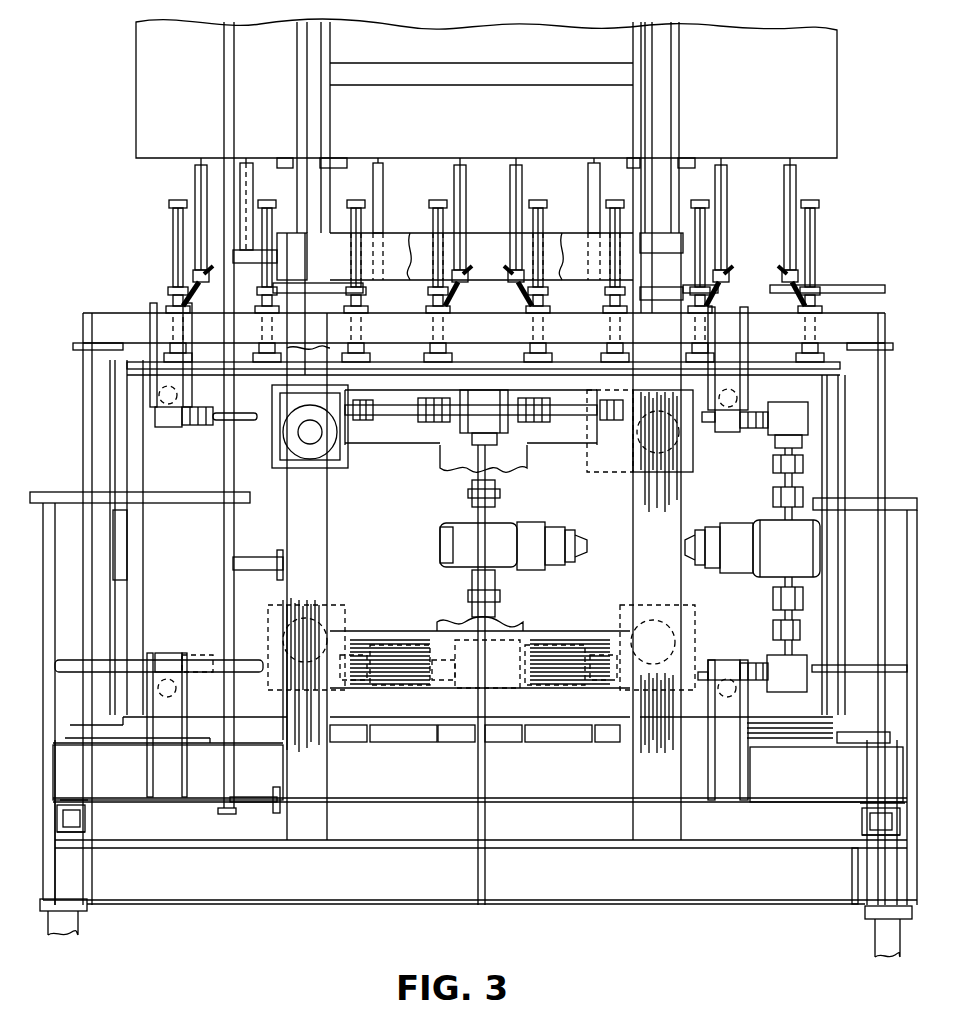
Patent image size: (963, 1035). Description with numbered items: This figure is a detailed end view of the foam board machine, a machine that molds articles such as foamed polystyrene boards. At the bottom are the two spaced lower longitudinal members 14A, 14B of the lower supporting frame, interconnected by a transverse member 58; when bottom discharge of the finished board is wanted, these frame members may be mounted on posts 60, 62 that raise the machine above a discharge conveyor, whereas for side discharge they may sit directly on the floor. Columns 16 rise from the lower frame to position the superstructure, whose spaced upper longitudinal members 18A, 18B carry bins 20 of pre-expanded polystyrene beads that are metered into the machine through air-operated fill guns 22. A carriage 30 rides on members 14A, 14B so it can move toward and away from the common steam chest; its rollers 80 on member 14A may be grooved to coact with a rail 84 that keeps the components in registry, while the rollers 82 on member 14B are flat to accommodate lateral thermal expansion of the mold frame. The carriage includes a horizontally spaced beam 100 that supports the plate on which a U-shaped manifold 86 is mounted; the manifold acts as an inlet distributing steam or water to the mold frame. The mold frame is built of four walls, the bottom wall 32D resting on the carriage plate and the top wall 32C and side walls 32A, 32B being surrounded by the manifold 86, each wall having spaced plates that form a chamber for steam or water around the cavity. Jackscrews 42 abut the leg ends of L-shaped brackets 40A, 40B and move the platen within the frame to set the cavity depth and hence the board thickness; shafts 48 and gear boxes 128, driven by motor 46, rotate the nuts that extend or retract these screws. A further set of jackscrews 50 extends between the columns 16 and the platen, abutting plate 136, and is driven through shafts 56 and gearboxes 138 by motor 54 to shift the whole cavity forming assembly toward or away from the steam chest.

The lower longitudinal member 14A is at (885, 888).
The lower longitudinal member 14B is at (72, 870).
The column 16 is at (328, 772).
The upper longitudinal member 18A is at (645, 292).
The upper longitudinal member 18B is at (327, 253).
The bin 20 is at (479, 134).
The air-operated fill gun 22 is at (172, 263).
The carriage 30 is at (418, 805).
The side wall of mold frame 32A is at (140, 548).
The side wall of mold frame 32B is at (830, 483).
The top wall of mold frame 32C is at (583, 367).
The bottom wall of mold frame 32D is at (575, 720).
The L-shaped bracket 40A is at (148, 772).
The L-shaped bracket 40B is at (157, 397).
The jackscrew 42 is at (173, 395).
The motor 46 is at (795, 560).
The shaft 48 is at (780, 482).
The jackscrew 50 is at (335, 455).
The motor 54 is at (496, 557).
The shaft 56 is at (477, 508).
The transverse member 58 is at (283, 888).
The post 60 is at (78, 923).
The post 62 is at (875, 938).
The roller 80 is at (872, 828).
The roller 82 is at (80, 816).
The rail 84 is at (887, 843).
The U-shaped manifold 86 is at (90, 462).
The beam 100 is at (520, 783).
The gear box 128 is at (790, 415).
The plate 136 is at (390, 552).
The gearbox 138 is at (493, 417).